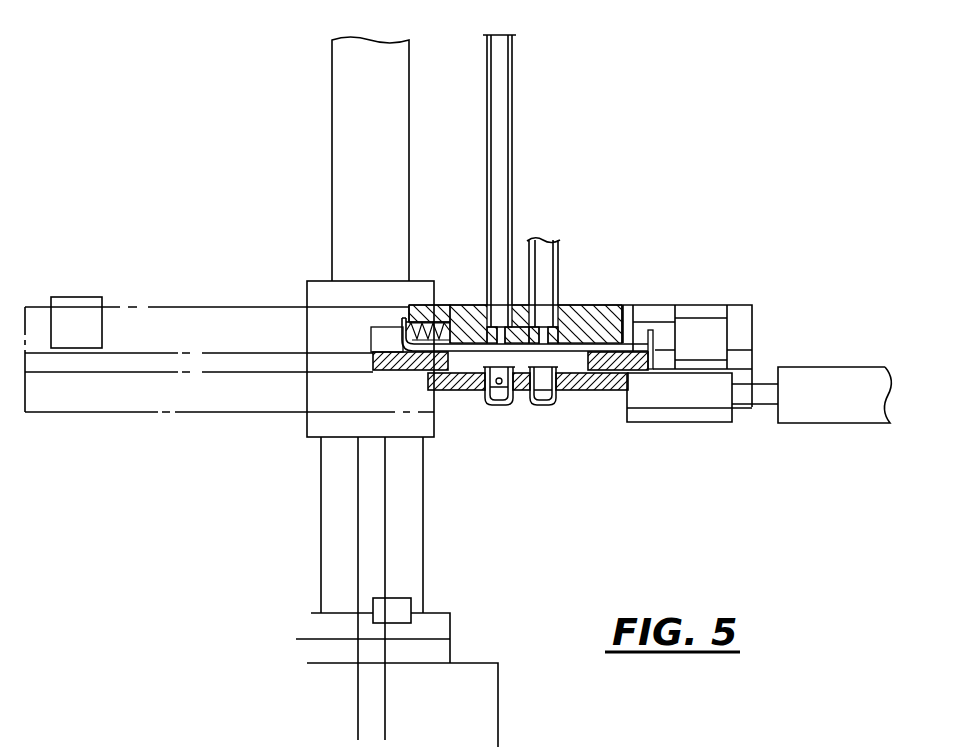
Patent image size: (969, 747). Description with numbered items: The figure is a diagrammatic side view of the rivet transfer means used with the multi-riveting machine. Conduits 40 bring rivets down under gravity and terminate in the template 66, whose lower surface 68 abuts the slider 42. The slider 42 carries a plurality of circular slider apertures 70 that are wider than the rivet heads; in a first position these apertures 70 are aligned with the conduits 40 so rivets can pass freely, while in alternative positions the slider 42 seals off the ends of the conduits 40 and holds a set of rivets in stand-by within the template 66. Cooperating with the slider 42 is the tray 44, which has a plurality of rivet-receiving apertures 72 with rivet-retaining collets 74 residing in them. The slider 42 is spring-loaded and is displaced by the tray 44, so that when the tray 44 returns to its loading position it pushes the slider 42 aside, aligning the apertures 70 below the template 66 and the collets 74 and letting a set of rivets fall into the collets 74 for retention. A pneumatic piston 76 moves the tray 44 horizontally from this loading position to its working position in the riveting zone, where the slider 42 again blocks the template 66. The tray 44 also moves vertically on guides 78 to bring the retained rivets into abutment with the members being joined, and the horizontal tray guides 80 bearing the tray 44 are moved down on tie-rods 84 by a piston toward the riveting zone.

The conduits 40 is at (498, 130).
The slider 42 is at (632, 305).
The tray 44 is at (450, 392).
The template 66 is at (470, 310).
The lower surface 68 is at (576, 352).
The slider apertures 70 is at (563, 306).
The rivet-receiving apertures 72 is at (560, 402).
The rivet-retaining collets 74 is at (500, 404).
The pneumatic piston 76 is at (832, 413).
The guides 78 is at (347, 127).
The horizontal tray guides 80 is at (217, 325).
The tie-rods 84 is at (363, 704).